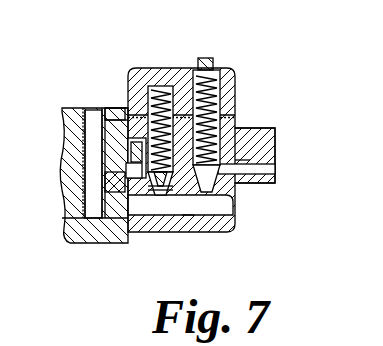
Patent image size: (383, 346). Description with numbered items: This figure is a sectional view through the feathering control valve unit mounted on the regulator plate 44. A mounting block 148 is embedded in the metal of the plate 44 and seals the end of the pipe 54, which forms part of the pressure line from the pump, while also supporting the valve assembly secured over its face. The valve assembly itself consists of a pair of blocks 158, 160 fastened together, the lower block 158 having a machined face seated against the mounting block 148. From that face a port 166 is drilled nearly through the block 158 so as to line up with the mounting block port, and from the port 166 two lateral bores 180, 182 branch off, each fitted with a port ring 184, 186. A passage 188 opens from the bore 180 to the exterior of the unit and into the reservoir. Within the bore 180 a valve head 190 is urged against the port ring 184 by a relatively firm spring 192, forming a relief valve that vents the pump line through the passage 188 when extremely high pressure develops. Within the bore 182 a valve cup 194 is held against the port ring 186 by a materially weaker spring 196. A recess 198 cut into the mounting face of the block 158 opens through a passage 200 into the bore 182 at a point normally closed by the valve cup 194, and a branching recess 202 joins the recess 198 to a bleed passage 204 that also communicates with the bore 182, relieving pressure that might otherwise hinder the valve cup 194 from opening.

The plate 44 is at (68, 175).
The pipe 54 is at (92, 128).
The mounting block 148 is at (63, 148).
The block 158 is at (267, 128).
The block 160 is at (214, 70).
The port 166 is at (188, 208).
The bore 180 is at (236, 122).
The bore 182 is at (140, 120).
The port ring 184 is at (226, 208).
The port ring 186 is at (163, 190).
The passage 188 is at (275, 171).
The valve head 190 is at (242, 163).
The spring 192 is at (220, 86).
The valve cup 194 is at (150, 190).
The spring 196 is at (160, 98).
The recess 198 is at (130, 172).
The passage 200 is at (137, 192).
The branching recess 202 is at (103, 125).
The bleed passage 204 is at (112, 108).